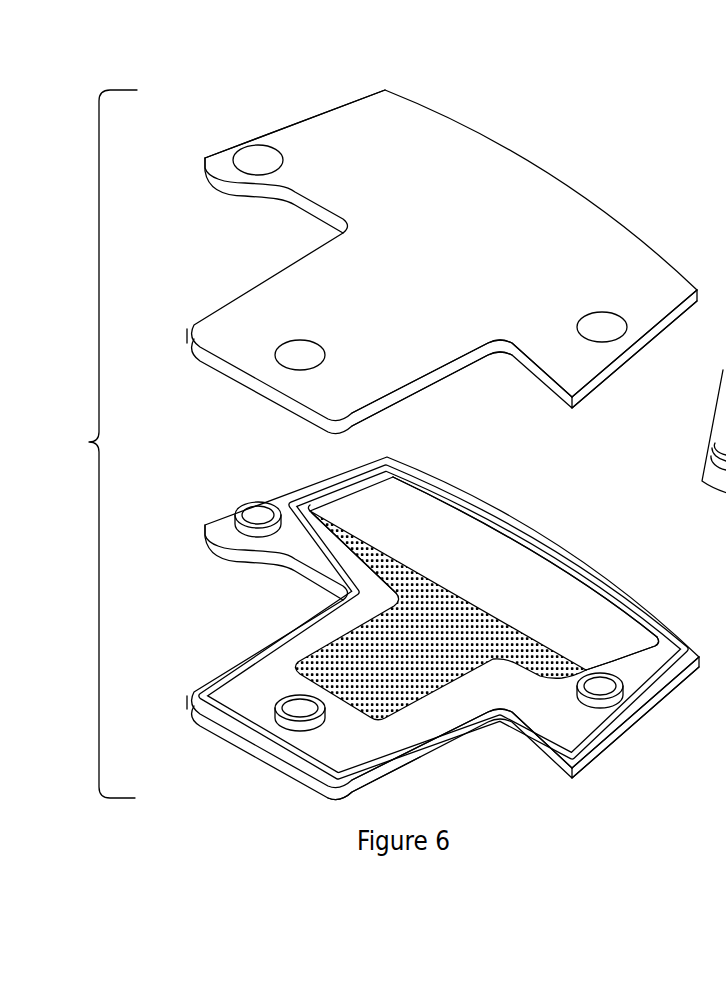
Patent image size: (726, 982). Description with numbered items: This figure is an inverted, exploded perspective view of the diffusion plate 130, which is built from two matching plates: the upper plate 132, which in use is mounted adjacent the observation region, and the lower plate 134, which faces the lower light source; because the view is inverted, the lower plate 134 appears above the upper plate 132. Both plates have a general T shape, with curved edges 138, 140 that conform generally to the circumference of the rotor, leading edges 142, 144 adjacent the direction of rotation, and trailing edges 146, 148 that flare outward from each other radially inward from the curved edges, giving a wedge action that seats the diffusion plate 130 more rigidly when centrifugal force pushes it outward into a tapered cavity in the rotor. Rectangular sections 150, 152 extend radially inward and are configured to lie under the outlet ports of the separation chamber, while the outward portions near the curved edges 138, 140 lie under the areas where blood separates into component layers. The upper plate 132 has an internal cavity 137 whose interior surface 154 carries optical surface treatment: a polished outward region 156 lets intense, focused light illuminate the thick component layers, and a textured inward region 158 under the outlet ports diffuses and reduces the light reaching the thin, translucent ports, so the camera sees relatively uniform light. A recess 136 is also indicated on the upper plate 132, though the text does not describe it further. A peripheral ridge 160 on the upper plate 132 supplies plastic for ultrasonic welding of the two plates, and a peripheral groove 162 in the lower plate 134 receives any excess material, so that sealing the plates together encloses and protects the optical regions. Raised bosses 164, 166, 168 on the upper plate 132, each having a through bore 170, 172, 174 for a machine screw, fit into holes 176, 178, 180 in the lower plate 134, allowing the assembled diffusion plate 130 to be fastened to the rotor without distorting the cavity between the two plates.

The diffusion plate 130 is at (87, 442).
The upper plate 132 is at (424, 637).
The lower plate 134 is at (431, 269).
The recess 136 is at (348, 657).
The internal cavity 137 is at (587, 623).
The curved edge 138 is at (478, 538).
The curved edge 140 is at (318, 485).
The leading edge 142 is at (603, 748).
The leading edge 144 is at (620, 367).
The trailing edge 146 is at (505, 148).
The trailing edge 148 is at (278, 131).
The rectangular section 150 is at (425, 760).
The rectangular section 152 is at (460, 372).
The surface 154 is at (525, 546).
The outward region 156 is at (492, 582).
The inward region 158 is at (408, 625).
The peripheral ridge 160 is at (378, 766).
The peripheral groove 162 is at (411, 420).
The raised boss 164 is at (651, 707).
The raised boss 166 is at (249, 747).
The raised boss 168 is at (229, 502).
The through bore 170 is at (600, 682).
The through bore 172 is at (280, 712).
The through bore 174 is at (258, 515).
The hole 176 is at (602, 323).
The hole 178 is at (302, 357).
The hole 180 is at (258, 165).